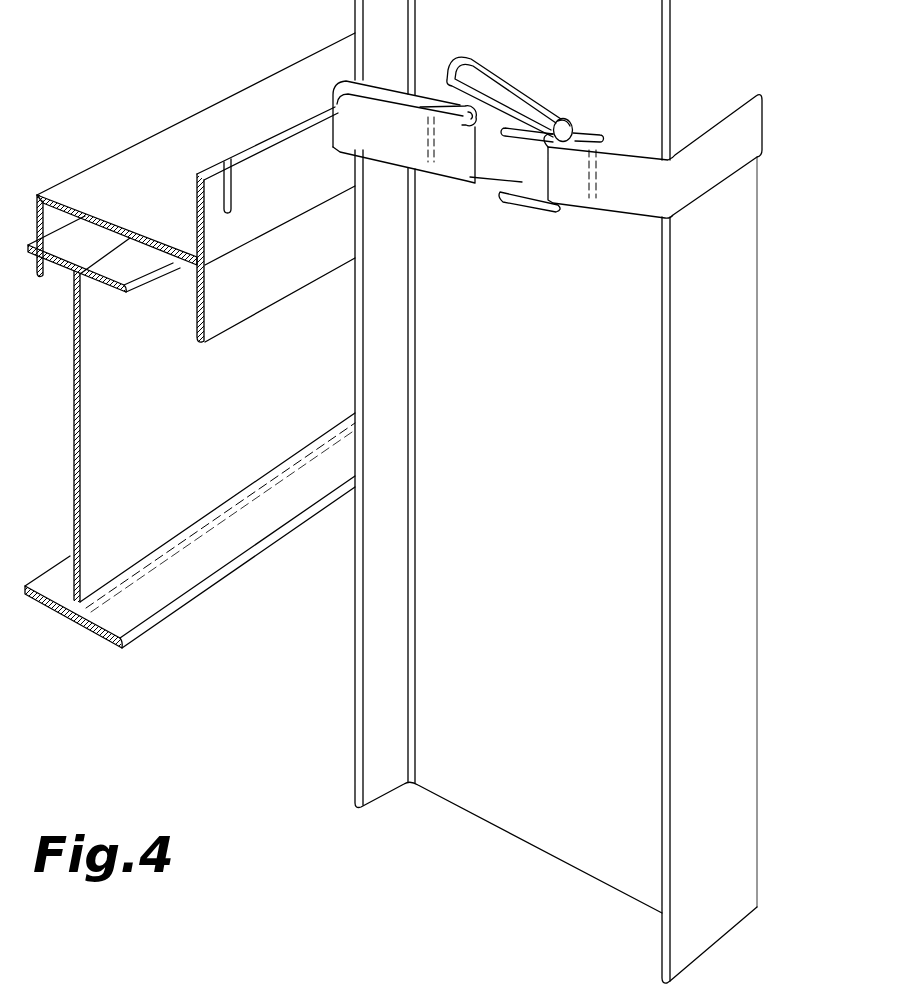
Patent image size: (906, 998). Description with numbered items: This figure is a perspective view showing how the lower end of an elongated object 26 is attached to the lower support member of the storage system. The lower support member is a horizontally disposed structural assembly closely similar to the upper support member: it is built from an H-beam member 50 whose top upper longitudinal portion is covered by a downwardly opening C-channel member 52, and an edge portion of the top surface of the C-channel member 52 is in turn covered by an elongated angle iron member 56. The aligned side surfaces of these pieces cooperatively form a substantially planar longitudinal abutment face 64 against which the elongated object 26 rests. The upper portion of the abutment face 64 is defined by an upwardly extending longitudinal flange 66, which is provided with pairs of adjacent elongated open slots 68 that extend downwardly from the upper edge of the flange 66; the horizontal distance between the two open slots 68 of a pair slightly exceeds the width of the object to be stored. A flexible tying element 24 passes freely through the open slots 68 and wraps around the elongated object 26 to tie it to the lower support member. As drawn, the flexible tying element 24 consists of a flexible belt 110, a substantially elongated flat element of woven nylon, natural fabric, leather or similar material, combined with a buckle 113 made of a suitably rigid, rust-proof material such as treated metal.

The flexible tying element 24 is at (767, 127).
The elongated object 26 is at (765, 356).
The H-beam member 50 is at (66, 451).
The C-channel member 52 is at (196, 155).
The angle iron member 56 is at (152, 226).
The longitudinal abutment face 64 is at (276, 262).
The longitudinal flange 66 is at (258, 145).
The open slot 68 is at (337, 150).
The flexible belt 110 is at (647, 185).
The buckle 113 is at (474, 93).